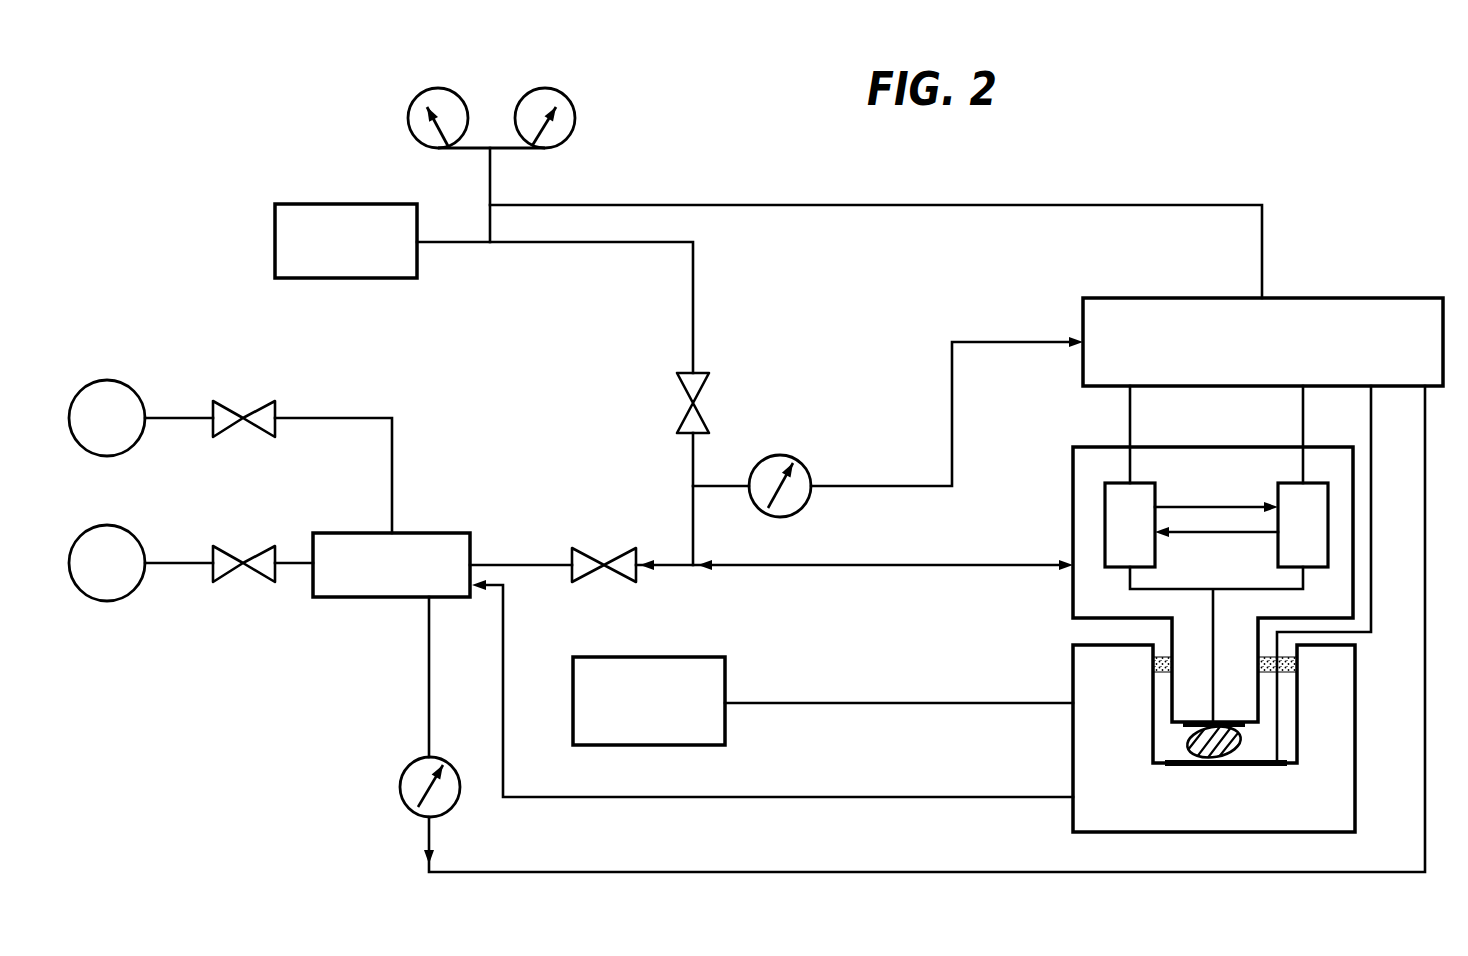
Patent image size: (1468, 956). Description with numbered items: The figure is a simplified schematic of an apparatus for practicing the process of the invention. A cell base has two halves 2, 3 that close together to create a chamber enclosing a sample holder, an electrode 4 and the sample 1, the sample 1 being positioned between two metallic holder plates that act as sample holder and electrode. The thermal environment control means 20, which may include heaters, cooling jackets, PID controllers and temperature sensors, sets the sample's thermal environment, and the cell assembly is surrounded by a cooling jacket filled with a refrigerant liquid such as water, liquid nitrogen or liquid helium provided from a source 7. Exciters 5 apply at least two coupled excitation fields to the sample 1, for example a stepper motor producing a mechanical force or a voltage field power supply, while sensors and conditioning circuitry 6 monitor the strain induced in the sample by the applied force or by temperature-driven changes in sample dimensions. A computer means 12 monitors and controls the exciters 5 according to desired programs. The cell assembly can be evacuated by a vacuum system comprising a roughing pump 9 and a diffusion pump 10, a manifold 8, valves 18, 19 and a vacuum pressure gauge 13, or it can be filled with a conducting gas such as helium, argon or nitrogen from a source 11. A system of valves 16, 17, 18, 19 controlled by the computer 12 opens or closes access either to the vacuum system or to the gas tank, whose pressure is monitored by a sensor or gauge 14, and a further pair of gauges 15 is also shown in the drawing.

The sample 1 is at (1242, 748).
The cell base half 2 is at (1348, 808).
The cell base half 3 is at (1346, 562).
The electrode 4 is at (1215, 612).
The exciters 5 is at (1138, 535).
The sensors and conditioning circuitry 6 is at (1311, 535).
The refrigerant liquid source 7 is at (656, 714).
The manifold 8 is at (398, 580).
The roughing pump 9 is at (107, 380).
The diffusion pump 10 is at (138, 590).
The conducting gas source 11 is at (356, 253).
The computer means 12 is at (1286, 361).
The vacuum pressure gauge 13 is at (393, 790).
The pressure sensor or gauge 14 is at (775, 452).
The pressure gauges 15 is at (482, 103).
The valve 16 is at (708, 405).
The valve 17 is at (617, 545).
The valve 18 is at (232, 547).
The valve 19 is at (243, 400).
The thermal environment control means 20 is at (1167, 745).